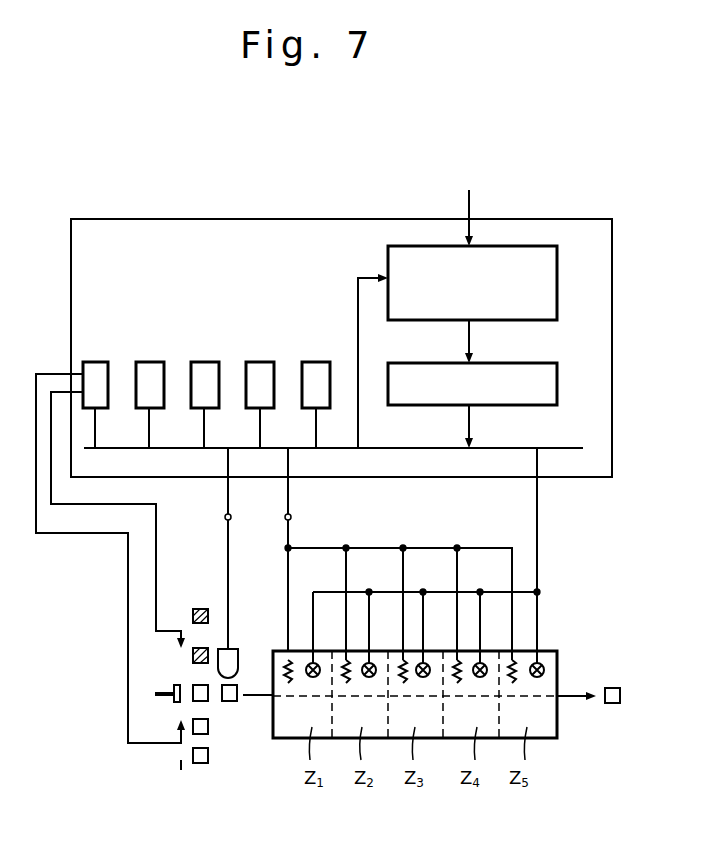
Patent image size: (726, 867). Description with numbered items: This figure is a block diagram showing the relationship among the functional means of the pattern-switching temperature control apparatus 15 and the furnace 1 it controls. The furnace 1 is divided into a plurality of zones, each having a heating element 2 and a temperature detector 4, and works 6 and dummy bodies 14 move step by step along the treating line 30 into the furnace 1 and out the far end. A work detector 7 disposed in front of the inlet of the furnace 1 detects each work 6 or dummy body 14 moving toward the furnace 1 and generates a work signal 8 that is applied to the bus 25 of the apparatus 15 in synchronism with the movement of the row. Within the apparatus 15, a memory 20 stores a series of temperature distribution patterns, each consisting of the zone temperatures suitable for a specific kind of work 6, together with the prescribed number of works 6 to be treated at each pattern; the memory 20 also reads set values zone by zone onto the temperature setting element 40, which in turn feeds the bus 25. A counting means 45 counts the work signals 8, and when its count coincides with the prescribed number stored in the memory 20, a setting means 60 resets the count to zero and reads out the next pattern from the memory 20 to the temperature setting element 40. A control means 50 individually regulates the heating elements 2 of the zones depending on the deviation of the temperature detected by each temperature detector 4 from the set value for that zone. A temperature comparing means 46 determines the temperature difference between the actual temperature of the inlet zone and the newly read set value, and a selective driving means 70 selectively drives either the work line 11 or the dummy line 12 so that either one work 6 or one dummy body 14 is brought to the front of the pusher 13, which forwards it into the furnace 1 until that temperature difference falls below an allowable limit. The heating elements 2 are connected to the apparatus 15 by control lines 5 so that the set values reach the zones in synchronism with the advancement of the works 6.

The furnace 1 is at (545, 740).
The heating element 2 is at (516, 672).
The temperature detector 4 is at (545, 668).
The heater control line 5 is at (291, 516).
The work 6 is at (612, 704).
The work detector 7 is at (240, 656).
The work signal 8 is at (231, 516).
The work line 11 is at (181, 760).
The dummy line 12 is at (181, 607).
The pusher 13 is at (172, 698).
The dummy body 14 is at (198, 607).
The temperature control apparatus 15 is at (512, 220).
The memory 20 is at (557, 300).
The bus 25 is at (512, 448).
The treating line 30 is at (247, 700).
The temperature setting element 40 is at (557, 373).
The counting means 45 is at (260, 362).
The temperature comparing means 46 is at (204, 362).
The control means 50 is at (149, 362).
The setting means 60 is at (316, 362).
The selective driving means 70 is at (95, 362).